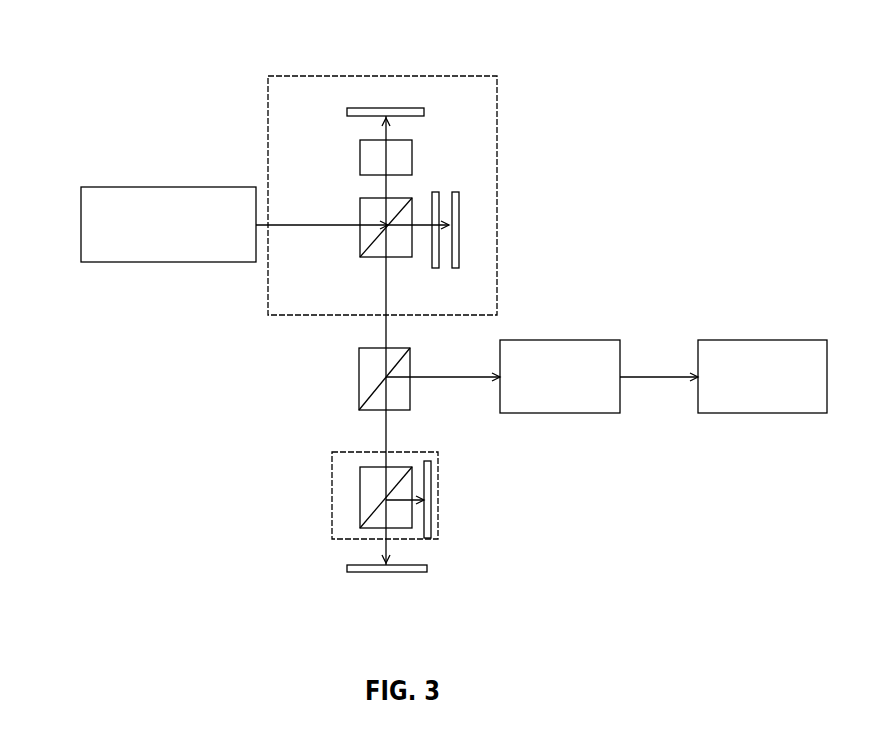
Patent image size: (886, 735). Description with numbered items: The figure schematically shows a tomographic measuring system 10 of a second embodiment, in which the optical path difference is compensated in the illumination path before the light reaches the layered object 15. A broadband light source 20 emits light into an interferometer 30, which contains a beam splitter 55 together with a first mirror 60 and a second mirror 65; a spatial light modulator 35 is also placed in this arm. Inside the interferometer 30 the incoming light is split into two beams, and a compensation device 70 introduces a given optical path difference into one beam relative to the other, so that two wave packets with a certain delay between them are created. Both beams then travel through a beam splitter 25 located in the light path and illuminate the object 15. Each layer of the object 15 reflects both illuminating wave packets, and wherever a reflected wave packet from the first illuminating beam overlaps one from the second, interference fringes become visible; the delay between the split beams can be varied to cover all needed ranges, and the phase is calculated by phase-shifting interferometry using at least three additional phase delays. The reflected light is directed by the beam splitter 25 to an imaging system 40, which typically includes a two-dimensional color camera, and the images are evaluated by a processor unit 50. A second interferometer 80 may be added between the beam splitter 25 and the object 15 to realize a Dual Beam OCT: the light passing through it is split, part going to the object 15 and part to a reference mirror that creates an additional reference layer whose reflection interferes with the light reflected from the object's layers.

The tomographic and/or topographic measuring system 10 is at (583, 517).
The layered object 15 is at (398, 573).
The broadband light source 20 is at (81, 240).
The beam splitter 25 is at (359, 365).
The interferometer 30 is at (328, 76).
The Spatial Light Modulator (SLM) 35 is at (435, 192).
The imaging system 40 is at (537, 340).
The processor unit 50 is at (733, 340).
The beam splitter 55 is at (360, 237).
The first mirror 60 is at (401, 108).
The second mirror 65 is at (459, 198).
The compensation device 70 is at (360, 146).
The second interferometer 80 is at (332, 477).